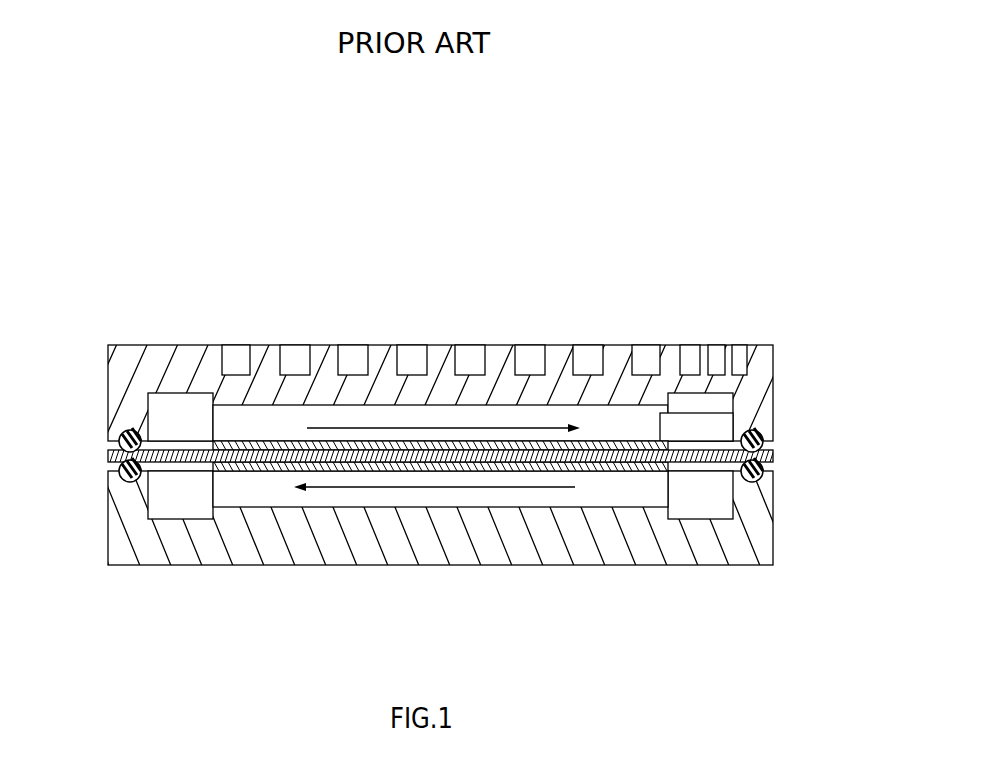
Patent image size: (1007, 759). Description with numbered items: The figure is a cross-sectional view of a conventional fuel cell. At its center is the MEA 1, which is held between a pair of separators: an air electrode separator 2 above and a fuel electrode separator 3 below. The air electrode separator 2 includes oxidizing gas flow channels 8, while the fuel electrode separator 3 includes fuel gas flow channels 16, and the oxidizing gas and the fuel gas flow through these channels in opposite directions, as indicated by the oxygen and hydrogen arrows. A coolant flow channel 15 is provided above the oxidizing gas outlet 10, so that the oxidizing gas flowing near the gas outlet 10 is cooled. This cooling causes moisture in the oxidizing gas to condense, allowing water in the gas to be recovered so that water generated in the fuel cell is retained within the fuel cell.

The MEA 1 is at (98, 460).
The air electrode separator 2 is at (123, 384).
The fuel electrode separator 3 is at (123, 519).
The oxidizing gas flow channels 8 is at (263, 425).
The oxidizing gas outlet 10 is at (700, 403).
The coolant flow channel 15 is at (689, 352).
The fuel gas flow channels 16 is at (618, 492).